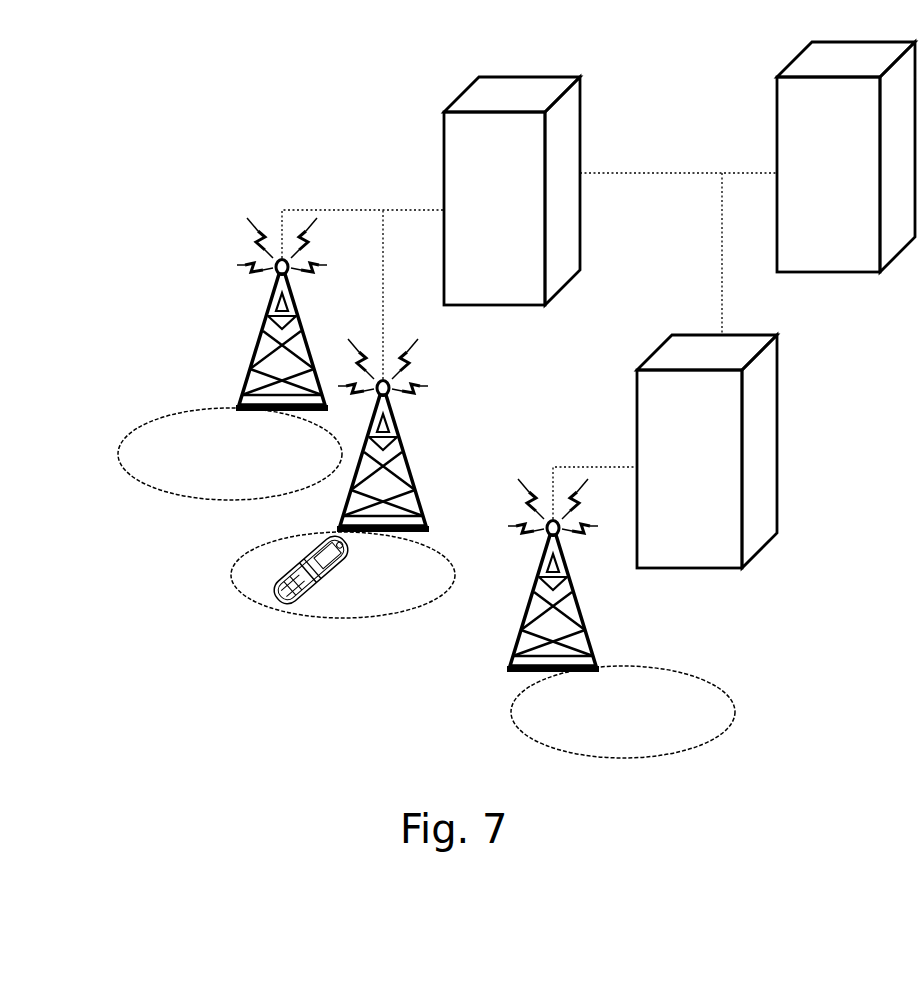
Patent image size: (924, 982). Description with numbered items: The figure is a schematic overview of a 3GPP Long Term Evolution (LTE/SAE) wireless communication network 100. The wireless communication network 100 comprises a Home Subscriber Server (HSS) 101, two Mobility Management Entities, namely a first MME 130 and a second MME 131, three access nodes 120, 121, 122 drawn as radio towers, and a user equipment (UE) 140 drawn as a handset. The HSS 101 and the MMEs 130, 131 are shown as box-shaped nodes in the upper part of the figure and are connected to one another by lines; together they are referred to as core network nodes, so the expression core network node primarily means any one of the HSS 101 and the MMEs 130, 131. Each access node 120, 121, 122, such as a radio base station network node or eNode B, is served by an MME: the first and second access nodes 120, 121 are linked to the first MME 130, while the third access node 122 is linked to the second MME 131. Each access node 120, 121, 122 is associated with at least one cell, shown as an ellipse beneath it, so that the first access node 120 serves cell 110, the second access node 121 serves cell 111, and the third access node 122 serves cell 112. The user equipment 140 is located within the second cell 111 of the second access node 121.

The wireless communication network 100 is at (296, 68).
The Home Subscriber Server (HSS) 101 is at (846, 157).
The Mobility Management Entity (MME) 130 is at (512, 191).
The Mobility Management Entity (MME) 131 is at (707, 451).
The access node 120 is at (238, 314).
The access node 121 is at (423, 435).
The access node 122 is at (517, 581).
The cell 110 is at (230, 485).
The cell 111 is at (343, 601).
The cell 112 is at (636, 688).
The user equipment (UE) 140 is at (331, 569).